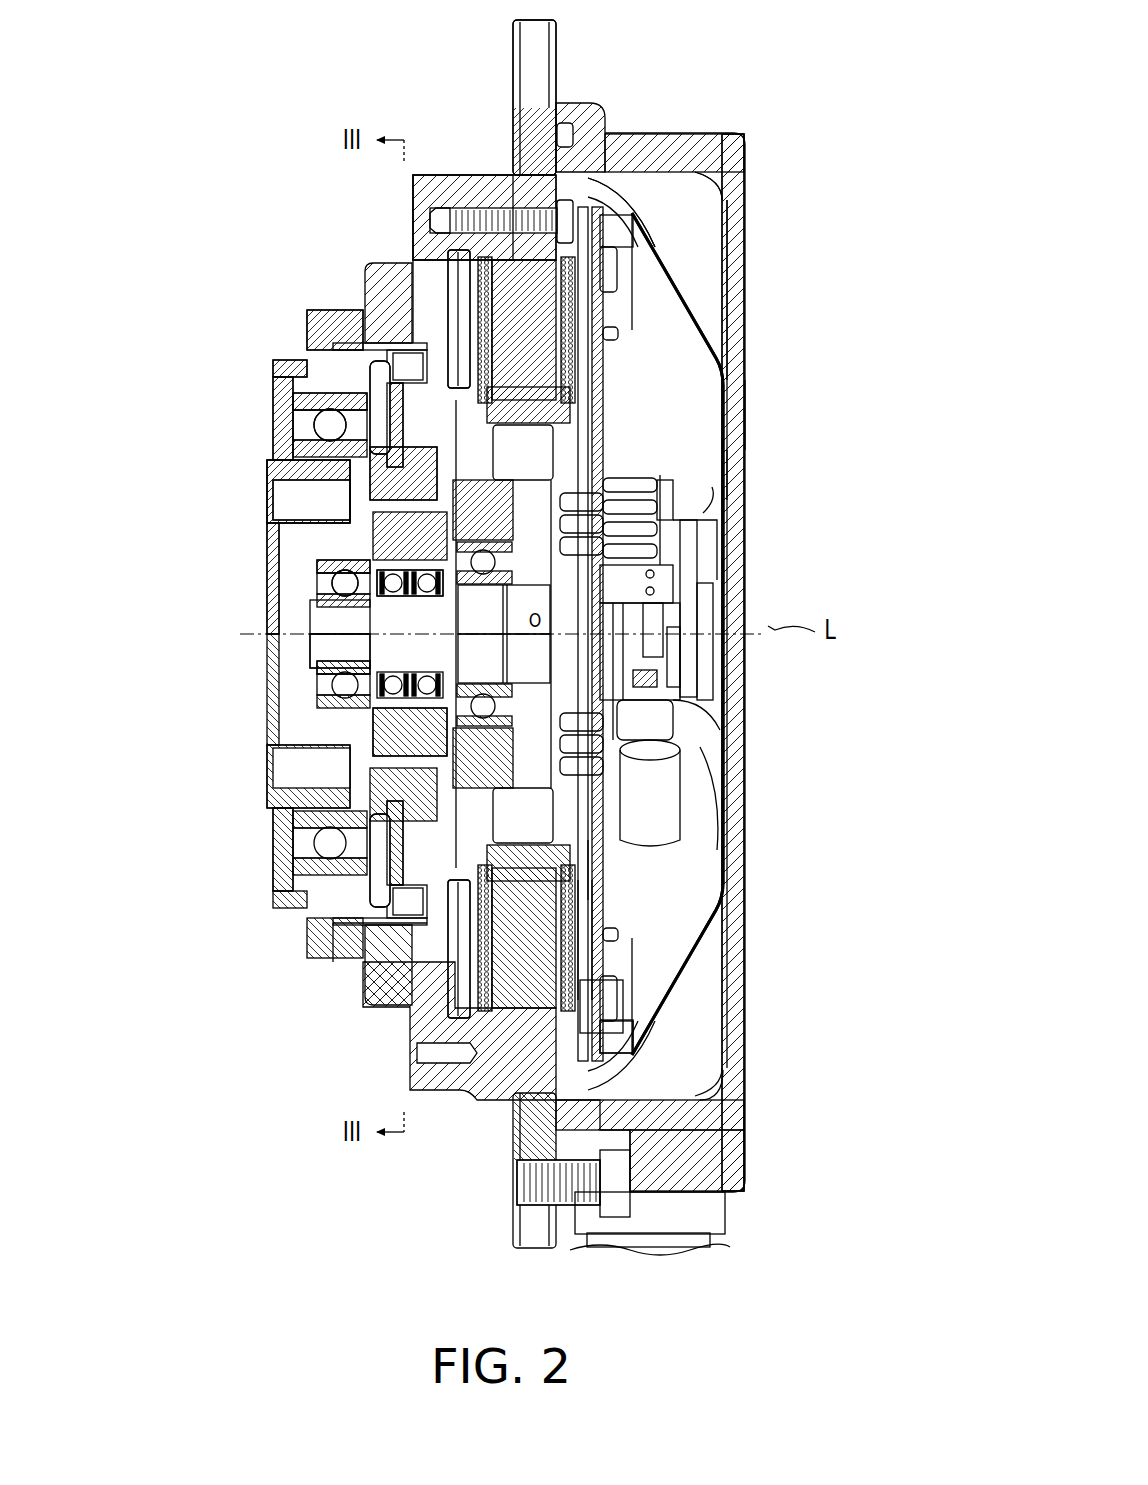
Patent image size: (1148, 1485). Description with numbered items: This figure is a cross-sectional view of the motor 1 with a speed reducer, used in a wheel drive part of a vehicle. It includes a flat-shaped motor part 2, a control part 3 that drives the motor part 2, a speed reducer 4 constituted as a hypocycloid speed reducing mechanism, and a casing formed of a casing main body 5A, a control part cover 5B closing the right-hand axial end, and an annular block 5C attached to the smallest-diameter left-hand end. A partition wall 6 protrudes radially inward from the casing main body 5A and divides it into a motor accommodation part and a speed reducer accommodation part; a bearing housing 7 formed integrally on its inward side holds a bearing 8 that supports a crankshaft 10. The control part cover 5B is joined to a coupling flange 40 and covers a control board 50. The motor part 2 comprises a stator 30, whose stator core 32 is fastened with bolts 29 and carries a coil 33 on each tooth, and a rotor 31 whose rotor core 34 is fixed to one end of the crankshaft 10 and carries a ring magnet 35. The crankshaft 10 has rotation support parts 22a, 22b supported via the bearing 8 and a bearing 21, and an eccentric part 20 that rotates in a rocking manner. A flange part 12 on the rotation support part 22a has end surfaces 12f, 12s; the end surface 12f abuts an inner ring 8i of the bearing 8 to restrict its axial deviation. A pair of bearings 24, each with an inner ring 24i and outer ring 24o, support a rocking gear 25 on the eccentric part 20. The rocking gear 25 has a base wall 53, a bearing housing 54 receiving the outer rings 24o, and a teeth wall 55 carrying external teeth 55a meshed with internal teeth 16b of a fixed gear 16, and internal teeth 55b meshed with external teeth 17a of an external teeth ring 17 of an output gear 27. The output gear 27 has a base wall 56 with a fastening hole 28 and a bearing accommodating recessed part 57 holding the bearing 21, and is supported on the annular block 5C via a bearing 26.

The motor with a speed reducer 1 is at (812, 112).
The motor part 2 is at (485, 180).
The control part 3 is at (686, 128).
The speed reducer 4 is at (272, 365).
The casing main body 5A is at (440, 170).
The control part cover 5B is at (747, 312).
The annular block 5C is at (282, 378).
The partition wall 6 is at (726, 370).
The bearing housing 7 is at (735, 450).
The bearing 8 is at (660, 528).
The inner ring 8i is at (700, 560).
The crankshaft 10 is at (702, 750).
The flange part 12 is at (273, 430).
The end surface 12f is at (663, 610).
The end surface 12s is at (335, 668).
The fixed gear 16 is at (390, 905).
The internal teeth 16b is at (410, 350).
The external teeth ring 17 is at (325, 428).
The external teeth 17a is at (307, 330).
The eccentric part 20 is at (345, 745).
The bearing 21 is at (320, 567).
The rotation support part 22a is at (603, 777).
The rotation support part 22b is at (320, 652).
The bearings 24 is at (332, 600).
The inner ring 24i is at (345, 640).
The outer ring 24o is at (330, 500).
The rocking gear 25 is at (390, 918).
The bearing 26 is at (300, 900).
The output gear 27 is at (270, 820).
The fastening hole 28 is at (280, 518).
The bolts 29 is at (620, 188).
The stator 30 is at (560, 192).
The rotor 31 is at (743, 410).
The stator core 32 is at (730, 192).
The coil 33 is at (735, 265).
The rotor core 34 is at (740, 470).
The ring magnet 35 is at (742, 345).
The coupling flange 40 is at (530, 1222).
The control board 50 is at (602, 858).
The base wall 53 is at (625, 900).
The bearing housing 54 is at (640, 905).
The teeth wall 55 is at (285, 400).
The external teeth 55a is at (383, 365).
The internal teeth 55b is at (372, 380).
The base wall 56 is at (283, 470).
The bearing accommodating recessed part 57 is at (270, 548).